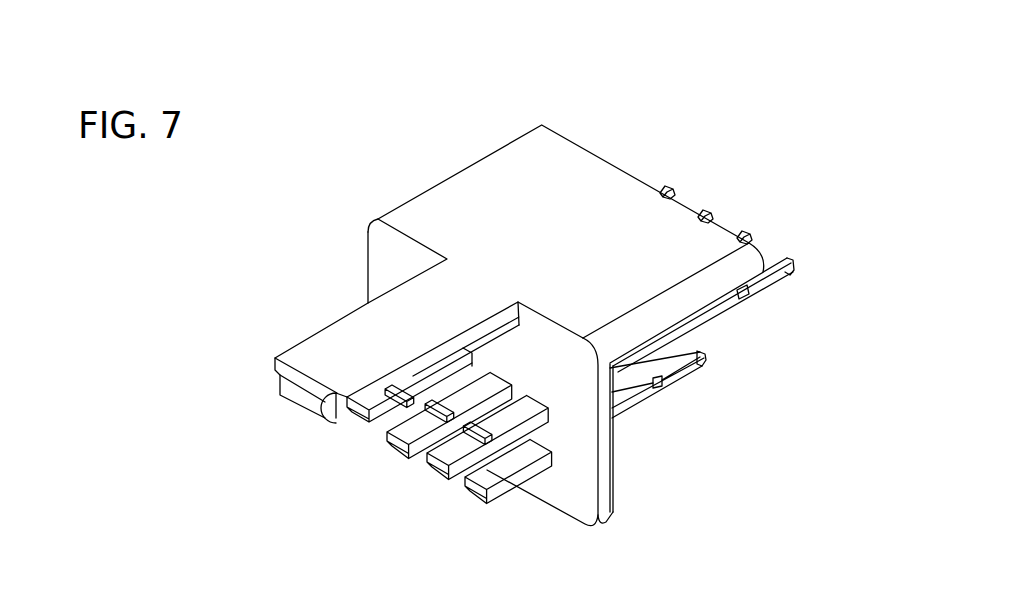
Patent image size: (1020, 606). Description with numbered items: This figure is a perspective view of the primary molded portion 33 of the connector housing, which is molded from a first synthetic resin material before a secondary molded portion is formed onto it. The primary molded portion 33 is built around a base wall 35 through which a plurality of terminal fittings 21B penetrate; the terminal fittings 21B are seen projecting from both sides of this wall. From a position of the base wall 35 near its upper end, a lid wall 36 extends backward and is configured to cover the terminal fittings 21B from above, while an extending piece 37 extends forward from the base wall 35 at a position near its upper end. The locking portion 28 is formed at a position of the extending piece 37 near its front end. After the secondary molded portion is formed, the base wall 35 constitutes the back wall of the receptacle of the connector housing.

The primary molded portion 33 is at (445, 155).
The lid wall 36 is at (539, 165).
The extending piece 37 is at (322, 353).
The locking portion 28 is at (336, 424).
The terminal fittings 21B is at (452, 470).
The base wall 35 is at (576, 470).